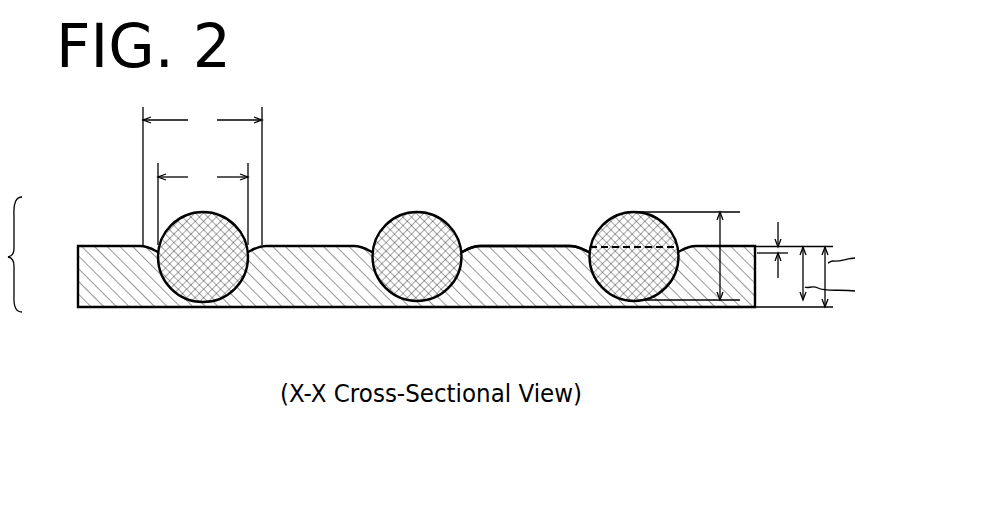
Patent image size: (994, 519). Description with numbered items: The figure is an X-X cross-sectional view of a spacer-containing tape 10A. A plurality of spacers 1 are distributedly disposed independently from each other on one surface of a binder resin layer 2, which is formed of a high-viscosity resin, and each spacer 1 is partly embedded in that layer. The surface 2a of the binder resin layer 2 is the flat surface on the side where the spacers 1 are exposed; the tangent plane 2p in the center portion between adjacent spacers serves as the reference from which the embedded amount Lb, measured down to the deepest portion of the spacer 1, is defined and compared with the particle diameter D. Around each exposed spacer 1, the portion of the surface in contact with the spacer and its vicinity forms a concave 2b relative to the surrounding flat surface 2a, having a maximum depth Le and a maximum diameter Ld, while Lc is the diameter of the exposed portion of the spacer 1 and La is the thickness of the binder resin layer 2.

The spacer 1 is at (168, 266).
The binder resin layer 2 is at (84, 299).
The surface of the binder resin layer 2a is at (533, 247).
The concave (inclination) 2b is at (463, 247).
The tangent plane 2p is at (587, 247).
The spacer-containing tape 10A is at (129, 428).